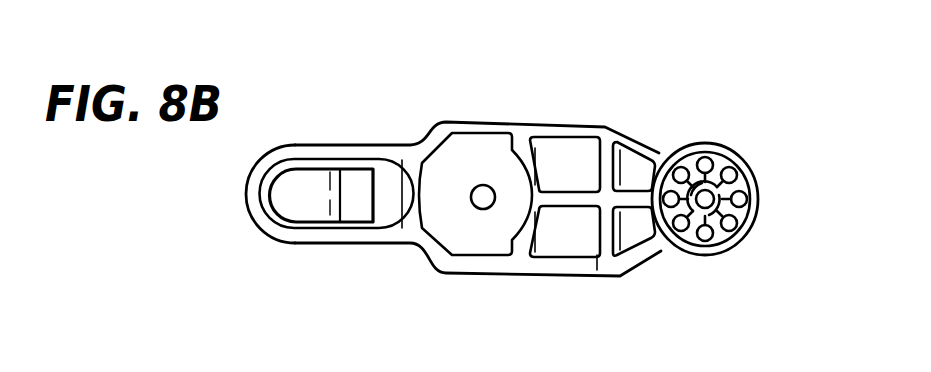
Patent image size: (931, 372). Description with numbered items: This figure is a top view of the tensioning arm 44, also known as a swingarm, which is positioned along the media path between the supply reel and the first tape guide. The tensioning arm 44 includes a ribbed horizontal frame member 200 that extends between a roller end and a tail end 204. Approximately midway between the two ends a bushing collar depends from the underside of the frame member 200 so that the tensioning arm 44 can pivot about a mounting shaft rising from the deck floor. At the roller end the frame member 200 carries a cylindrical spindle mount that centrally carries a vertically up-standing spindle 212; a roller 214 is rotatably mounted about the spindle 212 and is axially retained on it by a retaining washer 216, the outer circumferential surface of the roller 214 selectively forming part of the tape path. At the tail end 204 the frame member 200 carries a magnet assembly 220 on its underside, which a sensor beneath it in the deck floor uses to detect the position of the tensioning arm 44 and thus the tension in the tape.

The tensioning arm 44 is at (698, 65).
The frame member 200 is at (609, 131).
The tail end 204 is at (250, 212).
The magnet assembly 220 is at (307, 208).
The roller 214 is at (722, 148).
The spindle 212 is at (712, 186).
The retaining washer 216 is at (728, 223).